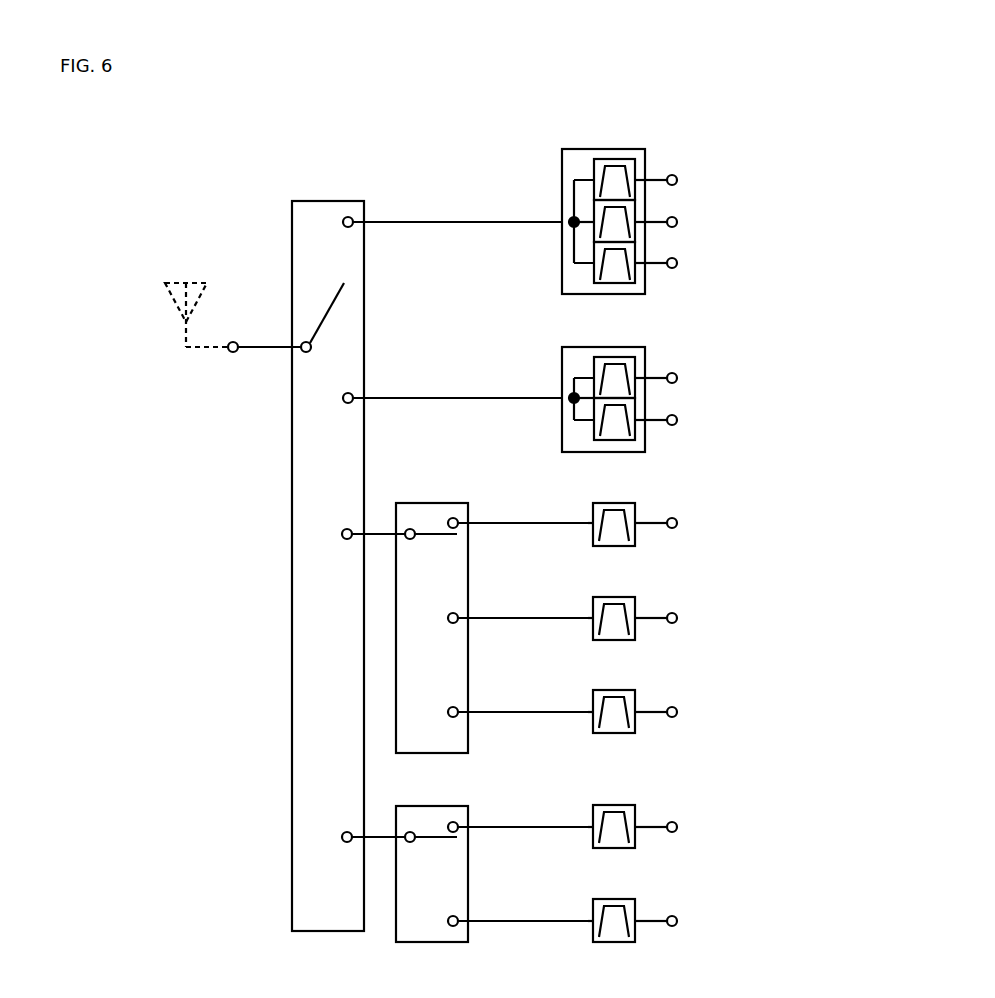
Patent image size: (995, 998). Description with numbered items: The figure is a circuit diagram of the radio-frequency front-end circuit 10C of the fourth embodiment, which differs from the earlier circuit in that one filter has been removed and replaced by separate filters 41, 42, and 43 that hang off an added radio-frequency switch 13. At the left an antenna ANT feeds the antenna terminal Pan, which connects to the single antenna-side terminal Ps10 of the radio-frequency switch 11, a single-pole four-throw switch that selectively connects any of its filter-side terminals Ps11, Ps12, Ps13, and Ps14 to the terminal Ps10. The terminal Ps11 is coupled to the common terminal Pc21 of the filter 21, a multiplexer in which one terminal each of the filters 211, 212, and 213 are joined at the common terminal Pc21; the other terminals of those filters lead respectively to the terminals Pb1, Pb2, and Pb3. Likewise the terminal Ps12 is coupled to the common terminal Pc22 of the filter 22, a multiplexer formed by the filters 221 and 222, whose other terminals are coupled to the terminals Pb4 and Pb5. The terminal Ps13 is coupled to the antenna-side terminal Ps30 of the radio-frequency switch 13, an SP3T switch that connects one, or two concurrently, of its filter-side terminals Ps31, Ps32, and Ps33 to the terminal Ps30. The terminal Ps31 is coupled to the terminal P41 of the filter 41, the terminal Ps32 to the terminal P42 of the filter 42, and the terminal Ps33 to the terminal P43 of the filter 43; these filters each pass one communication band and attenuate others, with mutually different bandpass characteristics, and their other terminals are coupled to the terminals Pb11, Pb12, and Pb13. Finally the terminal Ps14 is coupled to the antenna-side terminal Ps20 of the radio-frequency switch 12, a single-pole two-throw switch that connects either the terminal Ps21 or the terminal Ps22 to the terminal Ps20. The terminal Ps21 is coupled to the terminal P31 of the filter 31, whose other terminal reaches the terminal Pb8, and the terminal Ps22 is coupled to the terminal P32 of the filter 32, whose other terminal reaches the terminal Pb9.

The radio-frequency front-end circuit 10C is at (682, 79).
The radio-frequency switch 11 is at (347, 200).
The radio-frequency switch 12 is at (440, 806).
The radio-frequency switch 13 is at (440, 503).
The filter 21 is at (627, 149).
The filter 22 is at (627, 347).
The filter 211 is at (635, 163).
The filter 212 is at (635, 232).
The filter 213 is at (635, 282).
The filter 221 is at (635, 363).
The filter 222 is at (635, 437).
The filter 31 is at (615, 805).
The filter 32 is at (615, 899).
The filter 41 is at (615, 503).
The filter 42 is at (615, 597).
The filter 43 is at (615, 690).
The antenna ANT is at (210, 273).
The terminal Pan is at (230, 353).
The antenna-side terminal Ps10 is at (303, 345).
The filter-side terminal Ps11 is at (350, 226).
The filter-side terminal Ps12 is at (350, 402).
The filter-side terminal Ps13 is at (343, 532).
The filter-side terminal Ps14 is at (343, 835).
The antenna-side terminal Ps20 is at (410, 832).
The filter-side terminal Ps21 is at (457, 823).
The filter-side terminal Ps22 is at (457, 917).
The antenna-side terminal Ps30 is at (410, 529).
The filter-side terminal Ps31 is at (457, 519).
The filter-side terminal Ps32 is at (457, 614).
The filter-side terminal Ps33 is at (457, 708).
The common terminal Pc21 is at (568, 227).
The common terminal Pc22 is at (568, 403).
The terminal P31 is at (592, 831).
The terminal P32 is at (592, 925).
The terminal P41 is at (592, 527).
The terminal P42 is at (592, 621).
The terminal P43 is at (592, 715).
The terminal Pb1 is at (677, 180).
The terminal Pb2 is at (677, 222).
The terminal Pb3 is at (677, 263).
The terminal Pb4 is at (677, 378).
The terminal Pb5 is at (677, 420).
The terminal Pb8 is at (677, 827).
The terminal Pb9 is at (677, 921).
The terminal Pb11 is at (677, 523).
The terminal Pb12 is at (677, 618).
The terminal Pb13 is at (677, 712).